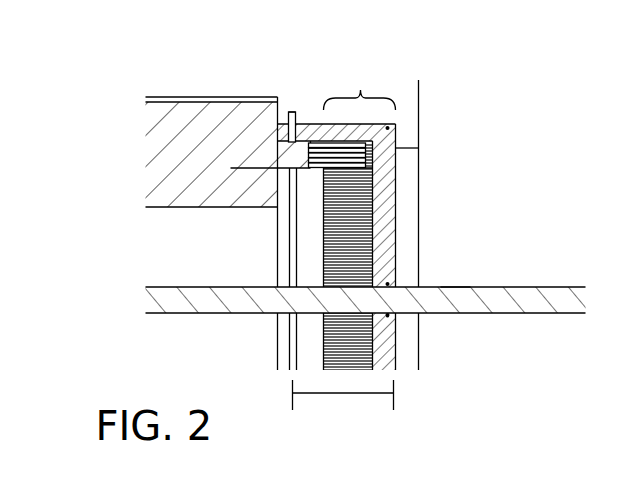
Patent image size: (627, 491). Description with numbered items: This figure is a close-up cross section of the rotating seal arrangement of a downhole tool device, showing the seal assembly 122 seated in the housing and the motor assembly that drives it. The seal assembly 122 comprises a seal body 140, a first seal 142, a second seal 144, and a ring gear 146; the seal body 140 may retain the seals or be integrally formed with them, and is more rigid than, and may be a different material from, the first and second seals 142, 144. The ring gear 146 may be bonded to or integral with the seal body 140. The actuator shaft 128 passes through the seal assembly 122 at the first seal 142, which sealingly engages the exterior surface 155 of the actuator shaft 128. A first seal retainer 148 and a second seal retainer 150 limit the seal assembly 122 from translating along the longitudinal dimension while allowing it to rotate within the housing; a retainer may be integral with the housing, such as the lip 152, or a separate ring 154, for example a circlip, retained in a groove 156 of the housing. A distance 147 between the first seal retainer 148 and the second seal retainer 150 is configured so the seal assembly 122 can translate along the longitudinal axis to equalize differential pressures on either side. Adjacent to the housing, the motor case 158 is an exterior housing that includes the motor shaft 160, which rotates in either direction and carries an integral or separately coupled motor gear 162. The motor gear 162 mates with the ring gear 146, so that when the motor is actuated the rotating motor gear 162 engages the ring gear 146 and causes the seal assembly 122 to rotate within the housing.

The seal assembly 122 is at (360, 86).
The actuator shaft 128 is at (546, 300).
The seal body 140 is at (388, 212).
The first seal 142 is at (388, 282).
The second seal 144 is at (390, 127).
The ring gear 146 is at (358, 242).
The distance 147 is at (340, 393).
The first seal retainer 148 is at (410, 120).
The second seal retainer 150 is at (288, 257).
The lip 152 is at (402, 148).
The ring 154 is at (302, 112).
The exterior surface 155 is at (449, 287).
The groove 156 is at (292, 110).
The motor case 158 is at (176, 100).
The motor shaft 160 is at (310, 148).
The motor gear 162 is at (310, 160).